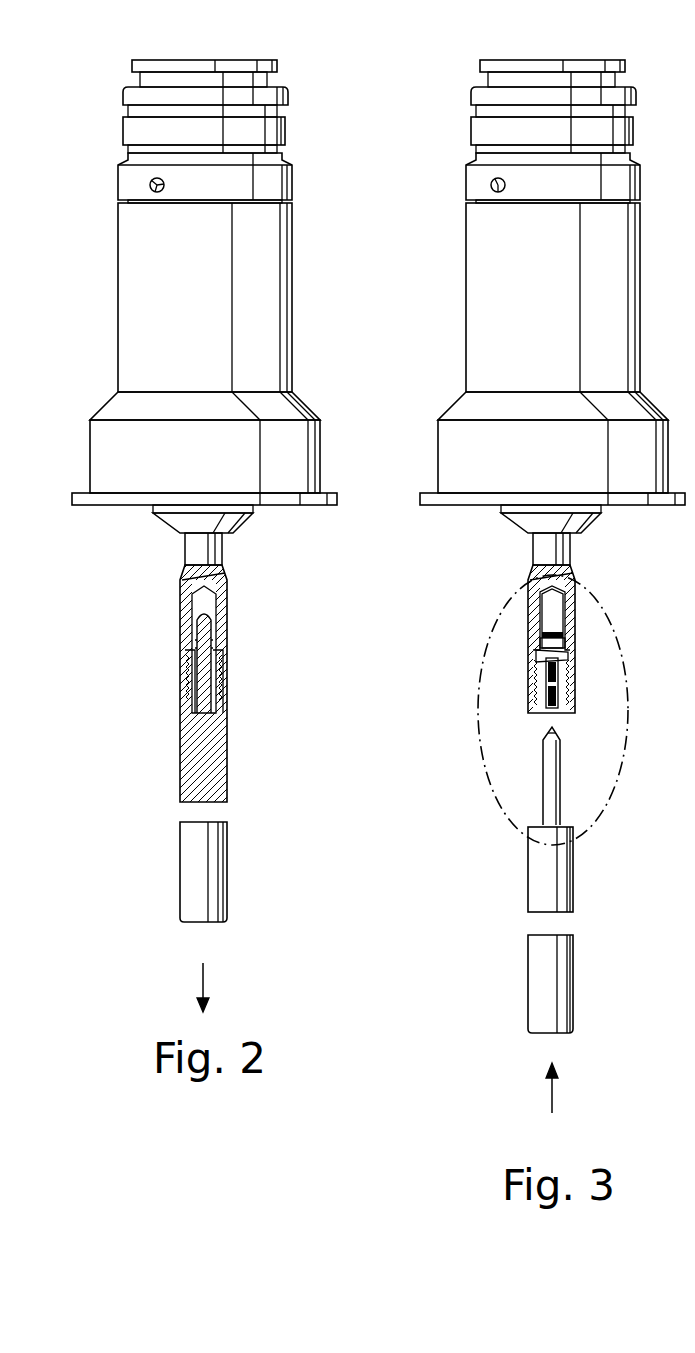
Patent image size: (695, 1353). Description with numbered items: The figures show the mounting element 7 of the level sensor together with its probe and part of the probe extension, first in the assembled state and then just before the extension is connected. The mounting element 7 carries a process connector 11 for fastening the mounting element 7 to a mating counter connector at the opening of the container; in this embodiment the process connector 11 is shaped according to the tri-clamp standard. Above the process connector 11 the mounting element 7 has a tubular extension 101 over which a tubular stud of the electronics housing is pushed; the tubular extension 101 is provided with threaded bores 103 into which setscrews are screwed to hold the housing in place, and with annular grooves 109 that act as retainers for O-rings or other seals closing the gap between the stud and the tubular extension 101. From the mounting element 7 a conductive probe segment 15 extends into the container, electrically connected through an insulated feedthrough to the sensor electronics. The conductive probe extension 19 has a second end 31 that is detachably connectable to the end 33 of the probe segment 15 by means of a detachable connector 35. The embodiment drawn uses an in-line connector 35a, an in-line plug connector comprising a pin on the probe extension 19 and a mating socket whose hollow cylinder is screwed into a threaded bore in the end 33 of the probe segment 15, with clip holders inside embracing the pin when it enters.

In FIG. 2, the tubular extension 101 is at (203, 112).
In FIG. 2, the threaded bores 103 is at (150, 185).
In FIG. 2, the annular grooves 109 is at (266, 78).
In FIG. 2, the mounting element 7 is at (232, 384).
In FIG. 2, the process connector 11 is at (208, 474).
In FIG. 2, the conductive probe segment 15 is at (216, 583).
In FIG. 2, the conductive probe extension 19 is at (195, 681).
In FIG. 2, the in-line connector 35a is at (190, 627).
In FIG. 3, the in-line connector 35a is at (598, 822).
In FIG. 3, the end of the probe segment 33 is at (538, 627).
In FIG. 3, the detachable connector 35 is at (683, 578).
In FIG. 3, the second end of the probe extension 31 is at (542, 877).